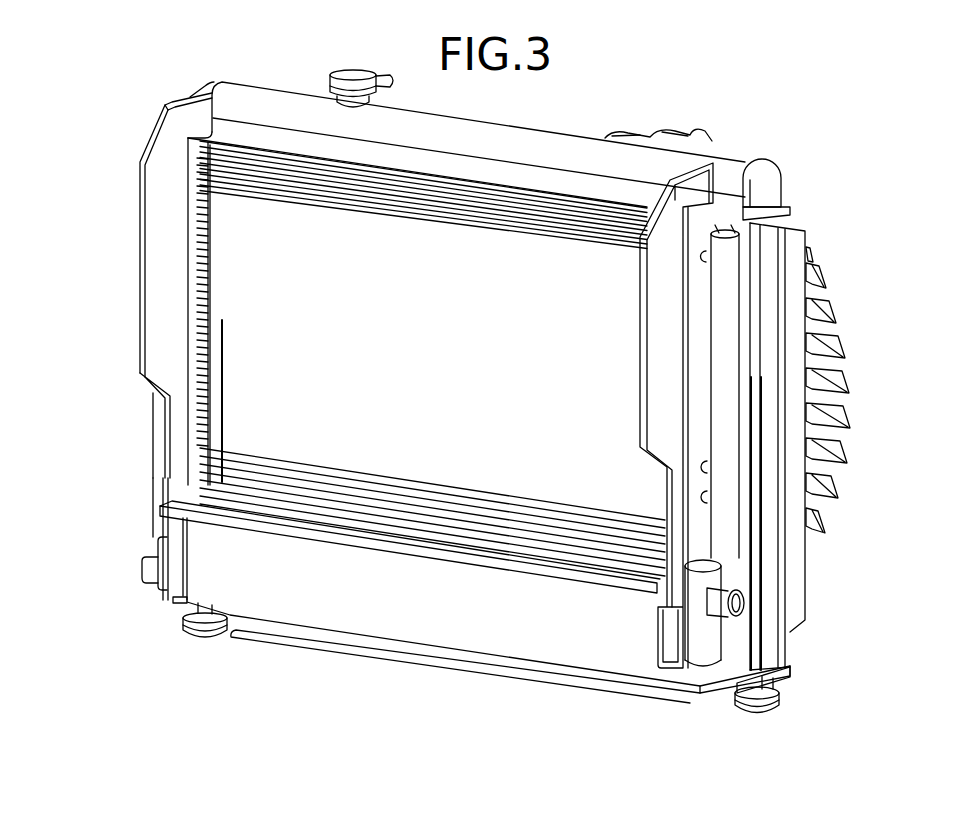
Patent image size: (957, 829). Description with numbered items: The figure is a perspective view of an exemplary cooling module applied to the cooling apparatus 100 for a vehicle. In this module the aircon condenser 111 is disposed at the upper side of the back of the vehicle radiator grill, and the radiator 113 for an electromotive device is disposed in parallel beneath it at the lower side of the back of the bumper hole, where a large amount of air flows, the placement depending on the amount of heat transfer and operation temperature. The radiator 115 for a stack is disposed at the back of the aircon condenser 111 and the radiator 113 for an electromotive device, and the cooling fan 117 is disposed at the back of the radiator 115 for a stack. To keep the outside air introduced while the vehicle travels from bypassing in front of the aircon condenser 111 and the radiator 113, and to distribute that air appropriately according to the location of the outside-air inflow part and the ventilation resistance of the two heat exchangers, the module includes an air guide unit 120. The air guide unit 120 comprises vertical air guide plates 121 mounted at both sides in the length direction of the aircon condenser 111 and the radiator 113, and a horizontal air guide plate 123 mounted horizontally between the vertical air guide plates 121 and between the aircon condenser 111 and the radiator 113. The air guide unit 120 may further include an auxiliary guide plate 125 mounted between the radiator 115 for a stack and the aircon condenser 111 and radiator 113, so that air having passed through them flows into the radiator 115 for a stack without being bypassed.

The cooling apparatus 100 is at (702, 103).
The aircon condenser 111 is at (800, 232).
The radiator for an electromotive device 113 is at (712, 641).
The radiator for a stack 115 is at (766, 178).
The cooling fan 117 is at (818, 310).
The air guide unit 120 is at (522, 715).
The vertical air guide plates 121 is at (165, 293).
The horizontal air guide plate 123 is at (467, 552).
The auxiliary guide plate 125 is at (770, 572).